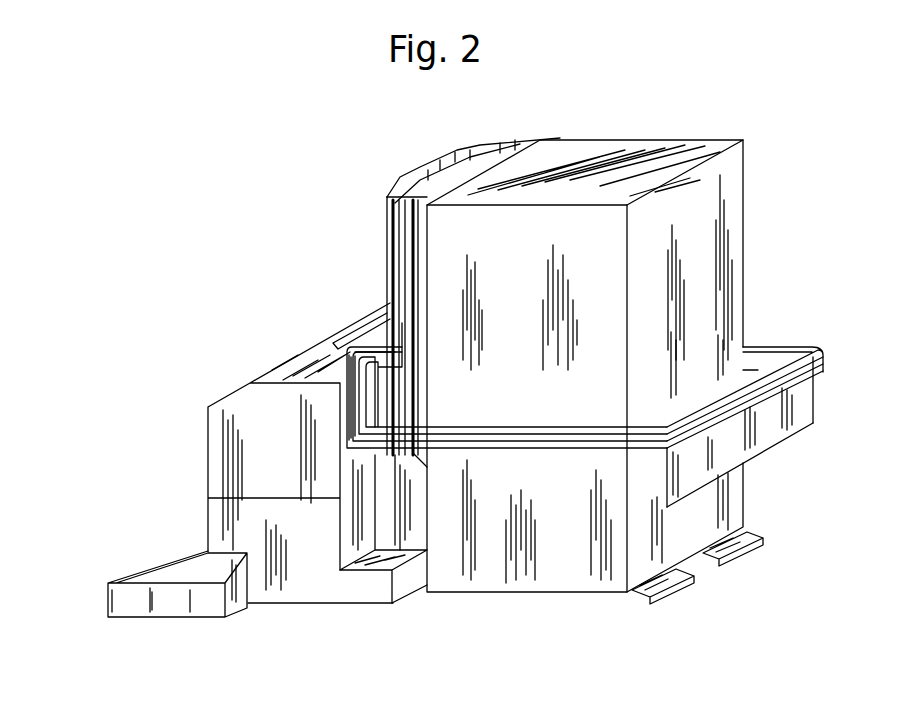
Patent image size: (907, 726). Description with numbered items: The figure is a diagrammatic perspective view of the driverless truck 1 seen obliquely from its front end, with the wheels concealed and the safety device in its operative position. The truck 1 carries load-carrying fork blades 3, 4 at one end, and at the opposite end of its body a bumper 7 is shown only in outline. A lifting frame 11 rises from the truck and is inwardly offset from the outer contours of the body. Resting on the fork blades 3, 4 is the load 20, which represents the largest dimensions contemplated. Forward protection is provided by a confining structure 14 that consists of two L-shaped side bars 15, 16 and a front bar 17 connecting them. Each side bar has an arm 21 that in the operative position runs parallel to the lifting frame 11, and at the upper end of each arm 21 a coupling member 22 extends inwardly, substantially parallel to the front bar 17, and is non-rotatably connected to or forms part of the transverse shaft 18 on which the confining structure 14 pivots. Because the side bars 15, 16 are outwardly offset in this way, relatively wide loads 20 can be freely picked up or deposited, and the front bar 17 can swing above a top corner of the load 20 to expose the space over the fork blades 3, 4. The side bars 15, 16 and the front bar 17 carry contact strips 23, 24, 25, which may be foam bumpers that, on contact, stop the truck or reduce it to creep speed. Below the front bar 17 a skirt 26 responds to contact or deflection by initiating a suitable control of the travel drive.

The driverless truck 1 is at (235, 390).
The load-carrying fork blade 3 is at (694, 580).
The load-carrying fork blade 4 is at (758, 541).
The bumper 7 is at (150, 563).
The lifting frame 11 is at (408, 220).
The confining structure 14 is at (548, 447).
The side bar 15 is at (455, 453).
The side bar 16 is at (771, 343).
The front bar 17 is at (768, 395).
The transverse shaft 18 is at (363, 326).
The load 20 is at (713, 257).
The arm 21 is at (348, 422).
The coupling member 22 is at (333, 340).
The contact strip 23 is at (586, 440).
The contact strip 24 is at (715, 418).
The contact strip 25 is at (815, 348).
The skirt 26 is at (768, 428).